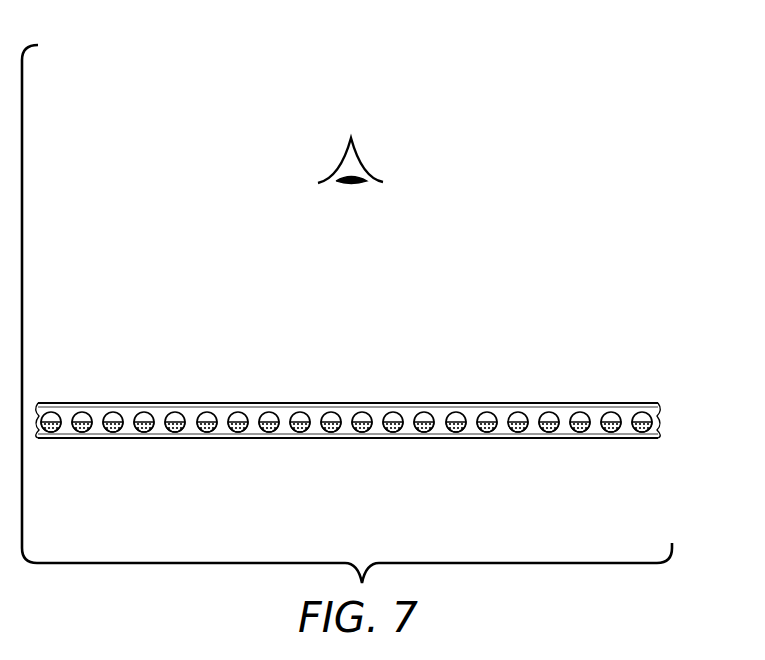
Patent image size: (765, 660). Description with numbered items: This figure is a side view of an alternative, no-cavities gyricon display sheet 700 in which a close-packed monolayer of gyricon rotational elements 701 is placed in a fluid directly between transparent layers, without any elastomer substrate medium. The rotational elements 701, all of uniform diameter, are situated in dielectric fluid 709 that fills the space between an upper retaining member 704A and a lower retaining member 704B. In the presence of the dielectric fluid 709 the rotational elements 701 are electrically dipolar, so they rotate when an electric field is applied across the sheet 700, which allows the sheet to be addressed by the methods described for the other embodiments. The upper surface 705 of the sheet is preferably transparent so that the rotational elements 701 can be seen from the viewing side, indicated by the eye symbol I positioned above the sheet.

The sheet 700 is at (556, 266).
The gyricon rotational elements 701 is at (513, 411).
The retaining member 704A is at (660, 405).
The retaining member 704B is at (660, 437).
The upper surface 705 is at (127, 400).
The dielectric fluid 709 is at (661, 421).
The viewer eye / incident light I is at (361, 163).